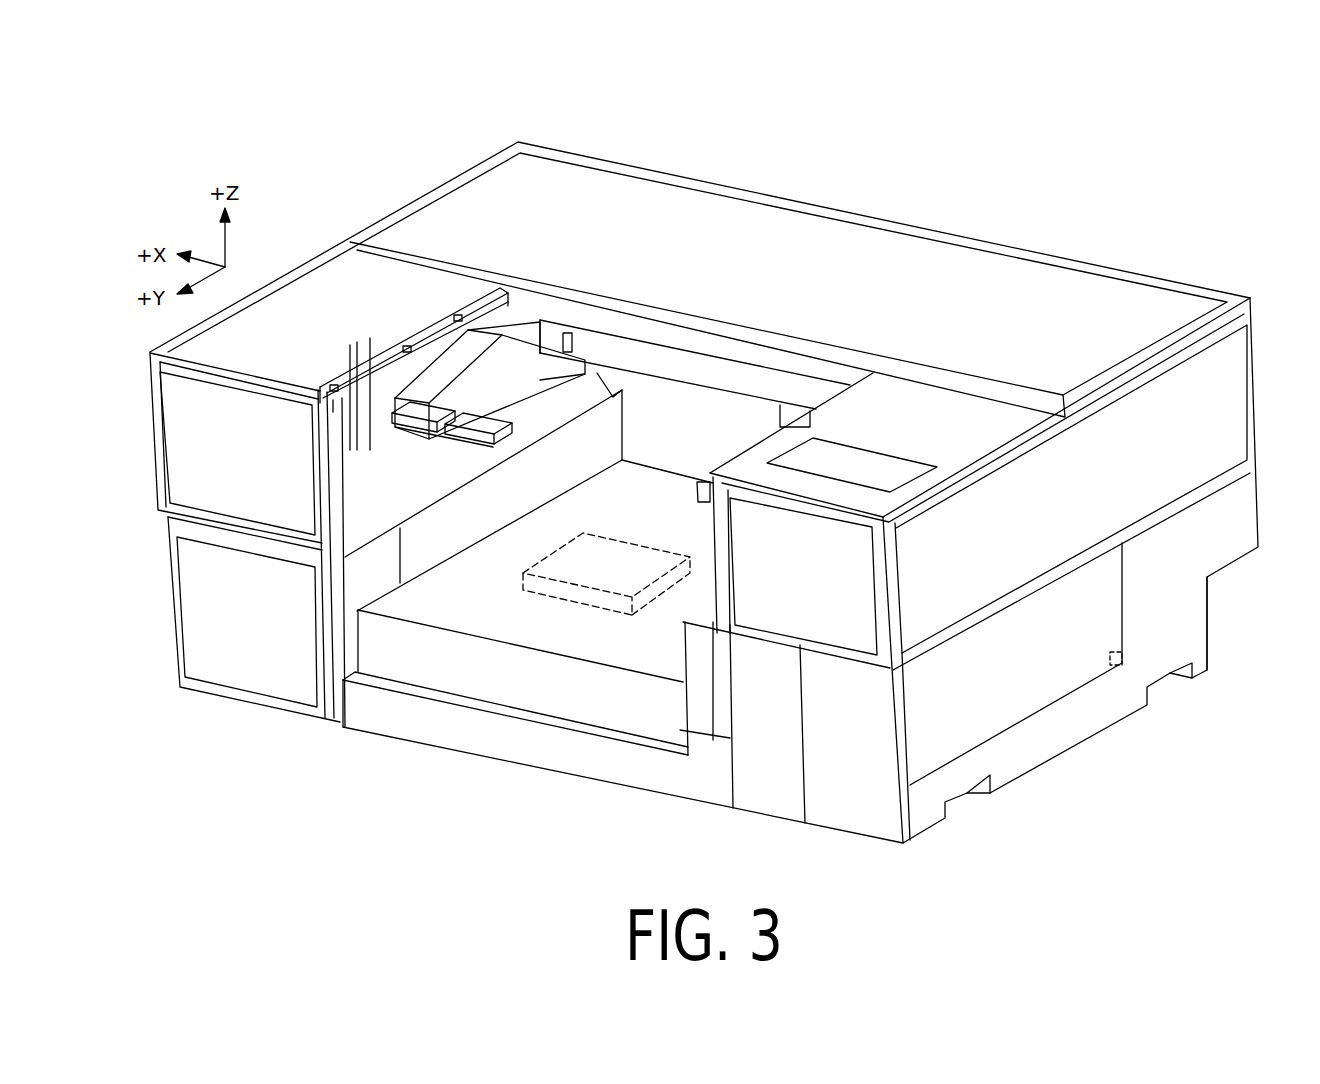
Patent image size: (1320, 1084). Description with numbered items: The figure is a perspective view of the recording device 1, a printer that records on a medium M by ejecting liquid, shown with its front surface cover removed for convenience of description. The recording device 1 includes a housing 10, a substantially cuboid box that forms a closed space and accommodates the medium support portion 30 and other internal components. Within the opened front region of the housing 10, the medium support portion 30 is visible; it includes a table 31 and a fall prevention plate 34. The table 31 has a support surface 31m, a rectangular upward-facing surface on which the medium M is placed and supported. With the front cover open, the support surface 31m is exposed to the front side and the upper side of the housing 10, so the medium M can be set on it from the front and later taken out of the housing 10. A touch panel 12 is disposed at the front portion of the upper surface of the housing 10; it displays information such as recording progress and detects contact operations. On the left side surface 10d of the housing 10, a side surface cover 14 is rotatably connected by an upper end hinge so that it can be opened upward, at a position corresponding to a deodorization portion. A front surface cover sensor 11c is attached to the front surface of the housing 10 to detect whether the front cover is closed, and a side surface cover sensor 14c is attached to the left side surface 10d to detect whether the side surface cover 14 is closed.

The recording device 1 is at (399, 166).
The housing 10 is at (313, 252).
The left side surface 10d is at (1183, 648).
The front surface cover sensor 11c is at (710, 633).
The touch panel 12 is at (862, 468).
The side surface cover 14 is at (1028, 700).
The side surface cover sensor 14c is at (1128, 663).
The medium support portion 30 is at (398, 557).
The table 31 is at (412, 580).
The support surface 31m is at (668, 522).
The fall prevention plate 34 is at (650, 442).
The medium M is at (548, 548).